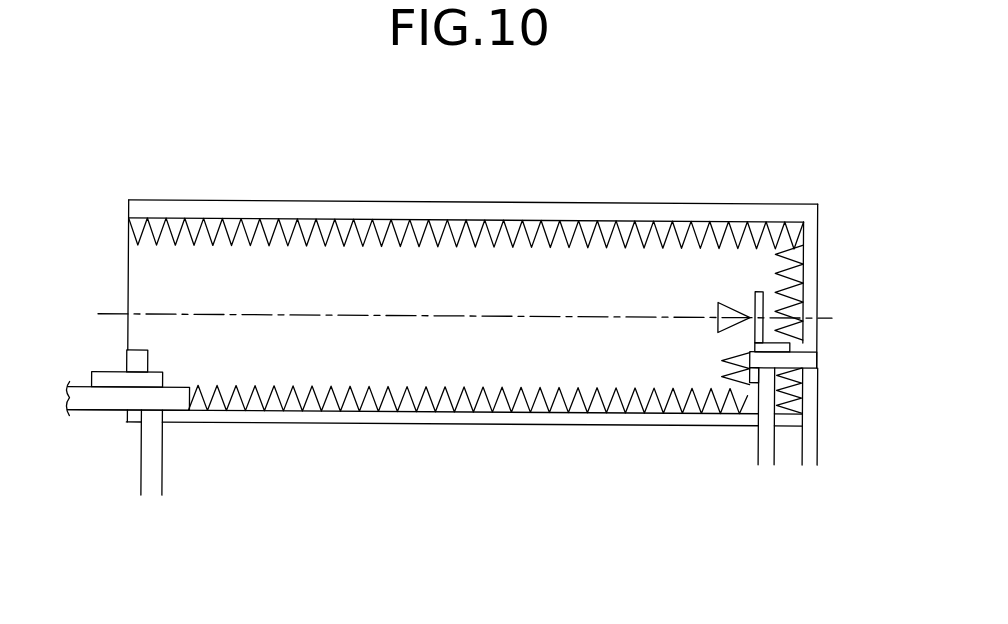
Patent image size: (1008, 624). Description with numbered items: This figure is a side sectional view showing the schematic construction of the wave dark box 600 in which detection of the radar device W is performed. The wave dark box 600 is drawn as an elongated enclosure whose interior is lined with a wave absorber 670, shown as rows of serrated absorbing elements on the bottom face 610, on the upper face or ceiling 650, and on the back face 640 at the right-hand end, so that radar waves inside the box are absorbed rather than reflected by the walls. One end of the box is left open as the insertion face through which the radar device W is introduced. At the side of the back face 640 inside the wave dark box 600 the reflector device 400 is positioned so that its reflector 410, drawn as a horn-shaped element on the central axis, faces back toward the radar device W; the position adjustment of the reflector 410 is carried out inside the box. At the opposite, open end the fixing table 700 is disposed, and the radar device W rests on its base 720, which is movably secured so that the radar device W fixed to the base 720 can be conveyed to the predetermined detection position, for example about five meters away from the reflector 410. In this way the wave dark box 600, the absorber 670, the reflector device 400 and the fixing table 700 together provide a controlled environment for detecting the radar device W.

The wave dark box 600 is at (734, 182).
The upper face (ceiling) 650 is at (420, 210).
The back face 640 is at (806, 232).
The bottom face 610 is at (480, 417).
The wave absorber 670 is at (253, 225).
The reflector 410 is at (718, 304).
The reflector device 400 is at (753, 442).
The fixing table 700 is at (102, 366).
The base 720 is at (155, 378).
The radar device W is at (141, 355).